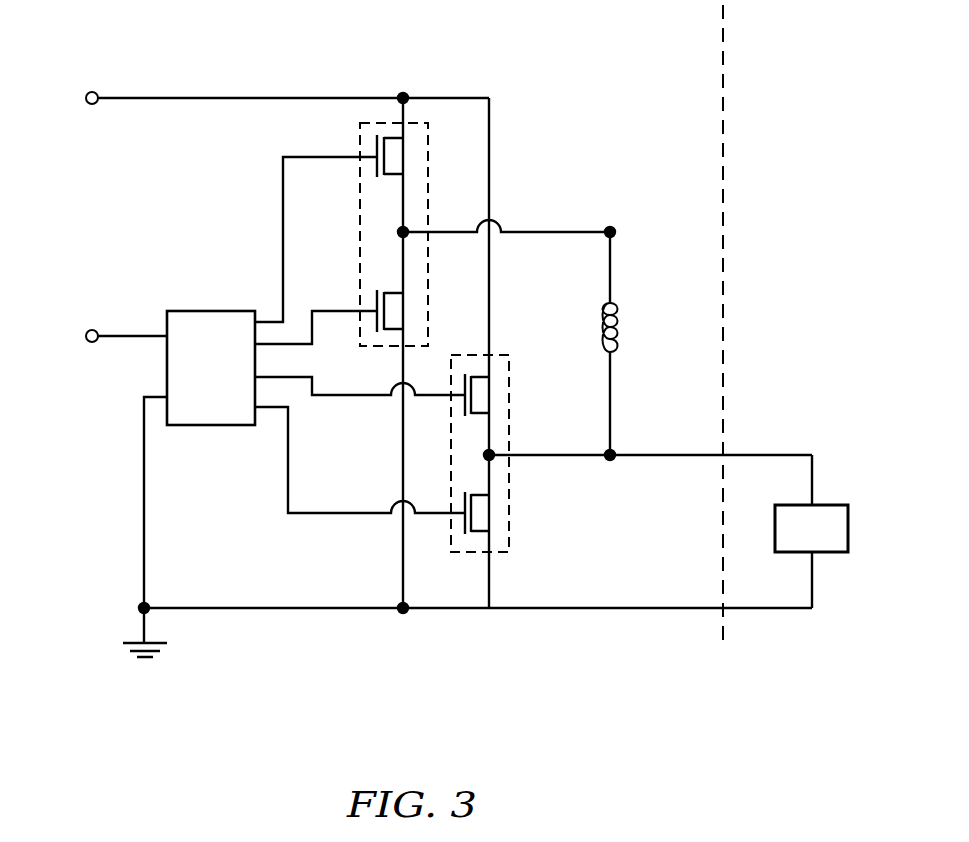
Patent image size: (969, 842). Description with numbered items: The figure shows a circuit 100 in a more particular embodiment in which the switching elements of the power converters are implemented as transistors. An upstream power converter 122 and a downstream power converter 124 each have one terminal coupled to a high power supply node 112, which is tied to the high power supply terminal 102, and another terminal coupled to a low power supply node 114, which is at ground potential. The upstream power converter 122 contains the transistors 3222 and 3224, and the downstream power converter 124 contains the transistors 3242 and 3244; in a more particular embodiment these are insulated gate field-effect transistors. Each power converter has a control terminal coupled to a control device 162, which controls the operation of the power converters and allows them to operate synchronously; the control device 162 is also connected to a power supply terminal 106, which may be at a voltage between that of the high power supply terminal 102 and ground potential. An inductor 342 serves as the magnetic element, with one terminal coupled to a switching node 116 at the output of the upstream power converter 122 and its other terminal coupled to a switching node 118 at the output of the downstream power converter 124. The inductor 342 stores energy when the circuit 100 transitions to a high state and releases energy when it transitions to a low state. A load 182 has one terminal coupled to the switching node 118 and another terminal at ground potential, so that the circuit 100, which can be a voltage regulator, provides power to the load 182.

The circuit 100 is at (723, 33).
The high power supply terminal 102 is at (222, 100).
The power supply terminal 106 is at (103, 337).
The high power supply node 112 is at (407, 89).
The low power supply node 114 is at (402, 617).
The switching node 116 is at (613, 226).
The switching node 118 is at (613, 463).
The upstream power converter 122 is at (357, 145).
The downstream power converter 124 is at (512, 537).
The control device 162 is at (193, 381).
The load 182 is at (793, 541).
The inductor 342 is at (627, 328).
The transistor 3222 is at (403, 148).
The transistor 3224 is at (403, 305).
The transistor 3242 is at (483, 400).
The transistor 3244 is at (483, 515).